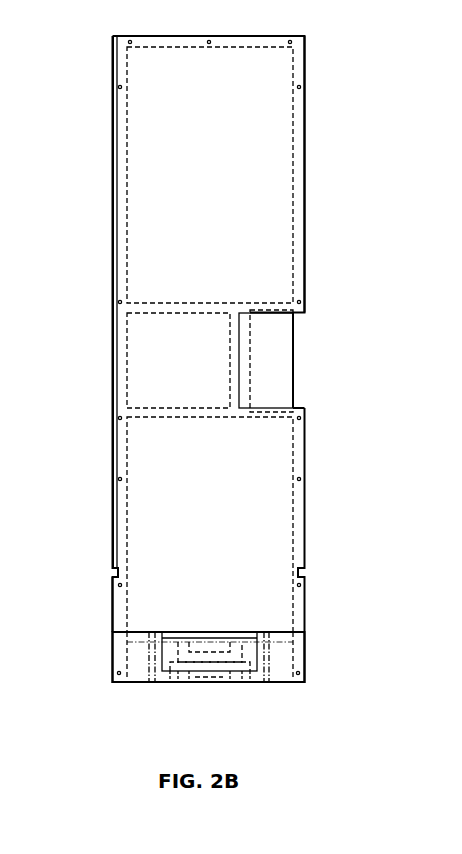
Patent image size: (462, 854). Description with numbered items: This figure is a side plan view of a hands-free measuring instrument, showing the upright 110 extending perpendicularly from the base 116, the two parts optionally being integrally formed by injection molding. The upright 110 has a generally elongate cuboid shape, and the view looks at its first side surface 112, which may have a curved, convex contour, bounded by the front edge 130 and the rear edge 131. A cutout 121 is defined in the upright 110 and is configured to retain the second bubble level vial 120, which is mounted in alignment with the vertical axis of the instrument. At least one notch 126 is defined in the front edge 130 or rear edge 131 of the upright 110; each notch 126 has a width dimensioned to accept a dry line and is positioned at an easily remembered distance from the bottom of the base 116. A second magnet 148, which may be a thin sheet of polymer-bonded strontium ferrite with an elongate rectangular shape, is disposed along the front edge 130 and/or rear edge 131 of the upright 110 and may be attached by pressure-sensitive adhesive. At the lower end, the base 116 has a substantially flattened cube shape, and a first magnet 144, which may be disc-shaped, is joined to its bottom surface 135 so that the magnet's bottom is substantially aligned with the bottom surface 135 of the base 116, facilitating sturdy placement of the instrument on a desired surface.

The upright 110 is at (305, 99).
The first side surface 112 is at (150, 245).
The base 116 is at (301, 683).
The second bubble level vial 120 is at (282, 365).
The cutout 121 is at (297, 409).
The notch 126 is at (114, 573).
The front edge 130 is at (305, 168).
The rear edge 131 is at (112, 612).
The bottom surface 135 is at (228, 683).
The first magnet 144 is at (208, 678).
The second magnet 148 is at (112, 84).